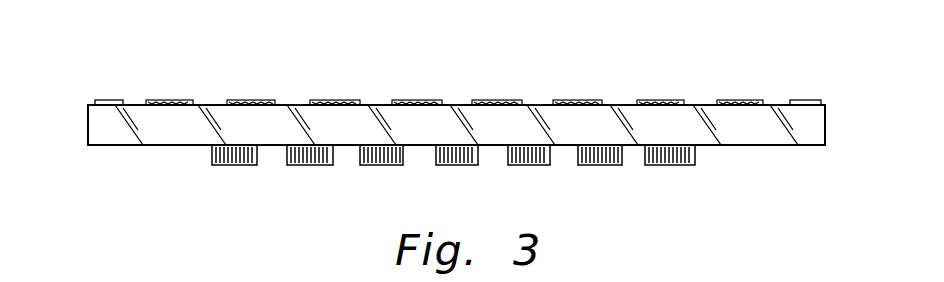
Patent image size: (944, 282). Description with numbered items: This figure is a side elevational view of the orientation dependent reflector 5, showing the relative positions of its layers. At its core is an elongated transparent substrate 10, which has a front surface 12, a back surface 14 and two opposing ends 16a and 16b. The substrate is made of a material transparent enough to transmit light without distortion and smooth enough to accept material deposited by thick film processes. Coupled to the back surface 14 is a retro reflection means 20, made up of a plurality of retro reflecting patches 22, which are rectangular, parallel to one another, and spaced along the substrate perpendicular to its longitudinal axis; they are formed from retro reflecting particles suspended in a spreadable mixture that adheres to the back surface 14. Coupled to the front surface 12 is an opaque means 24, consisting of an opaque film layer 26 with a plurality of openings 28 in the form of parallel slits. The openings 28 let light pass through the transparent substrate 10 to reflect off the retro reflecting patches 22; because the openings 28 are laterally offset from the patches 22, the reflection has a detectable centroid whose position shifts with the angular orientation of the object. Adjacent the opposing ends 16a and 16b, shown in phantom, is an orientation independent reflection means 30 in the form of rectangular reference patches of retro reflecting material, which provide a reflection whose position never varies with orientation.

The orientation dependent reflector 5 is at (707, 48).
The transparent substrate 10 is at (828, 121).
The front surface 12 is at (532, 105).
The back surface 14 is at (644, 147).
The opposing end 16a is at (87, 140).
The opposing end 16b is at (825, 145).
The retro reflection means 20 is at (417, 180).
The retro reflecting patches 22 is at (233, 165).
The opaque means 24 is at (454, 78).
The opaque film layer 26 is at (227, 100).
The openings 28 is at (368, 105).
The orientation independent reflection means 30 is at (116, 98).